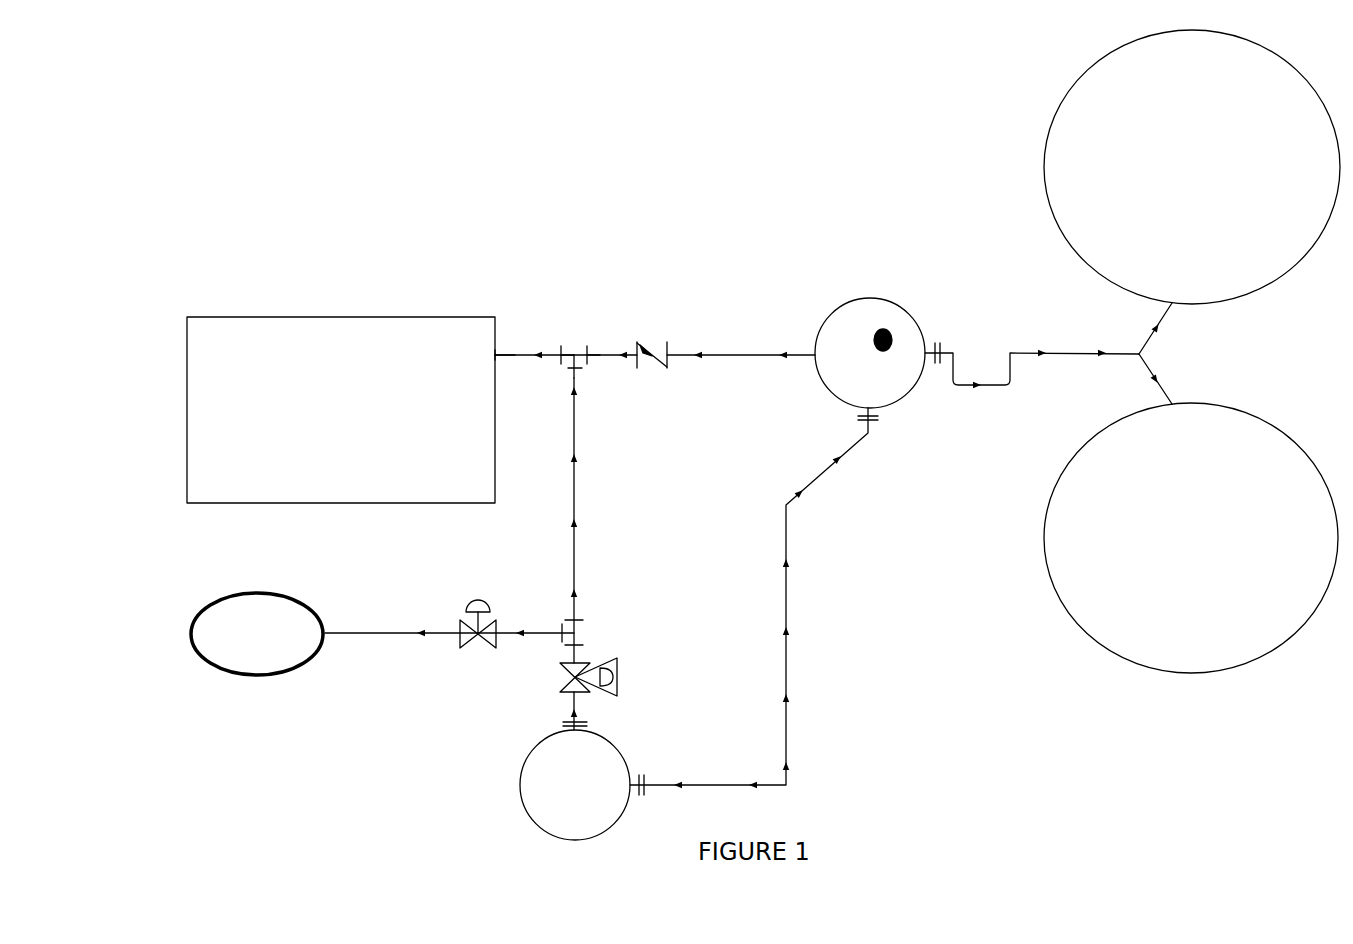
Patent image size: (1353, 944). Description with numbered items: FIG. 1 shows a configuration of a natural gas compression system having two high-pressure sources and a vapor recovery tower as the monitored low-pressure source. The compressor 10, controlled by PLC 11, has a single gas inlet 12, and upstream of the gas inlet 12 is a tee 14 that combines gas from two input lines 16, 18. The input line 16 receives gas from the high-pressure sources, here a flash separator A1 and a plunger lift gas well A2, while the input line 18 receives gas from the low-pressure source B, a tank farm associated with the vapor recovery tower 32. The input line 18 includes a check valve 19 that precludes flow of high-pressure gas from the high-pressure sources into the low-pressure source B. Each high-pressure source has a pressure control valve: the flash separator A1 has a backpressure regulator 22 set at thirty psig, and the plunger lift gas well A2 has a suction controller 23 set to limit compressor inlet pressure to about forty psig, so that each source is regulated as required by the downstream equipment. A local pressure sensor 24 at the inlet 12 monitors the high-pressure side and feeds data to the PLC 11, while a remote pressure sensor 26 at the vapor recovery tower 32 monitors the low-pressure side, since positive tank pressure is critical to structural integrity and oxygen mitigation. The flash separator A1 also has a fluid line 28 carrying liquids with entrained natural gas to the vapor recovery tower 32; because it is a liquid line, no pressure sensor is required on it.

The compressor 10 is at (341, 343).
The PLC 11 is at (411, 317).
The gas inlet 12 is at (497, 356).
The tee 14 is at (574, 355).
The input line 16 is at (575, 553).
The input line 18 is at (740, 356).
The check valve 19 is at (668, 353).
The backpressure regulator 22 is at (585, 662).
The suction controller 23 is at (460, 622).
The pressure sensor 24 is at (496, 355).
The remote pressure sensor 26 is at (892, 340).
The fluid line 28 is at (790, 693).
The vapor recovery tower 32 is at (820, 320).
The flash separator A1 is at (540, 822).
The plunger lift gas well A2 is at (259, 675).
The low-pressure source B is at (878, 328).